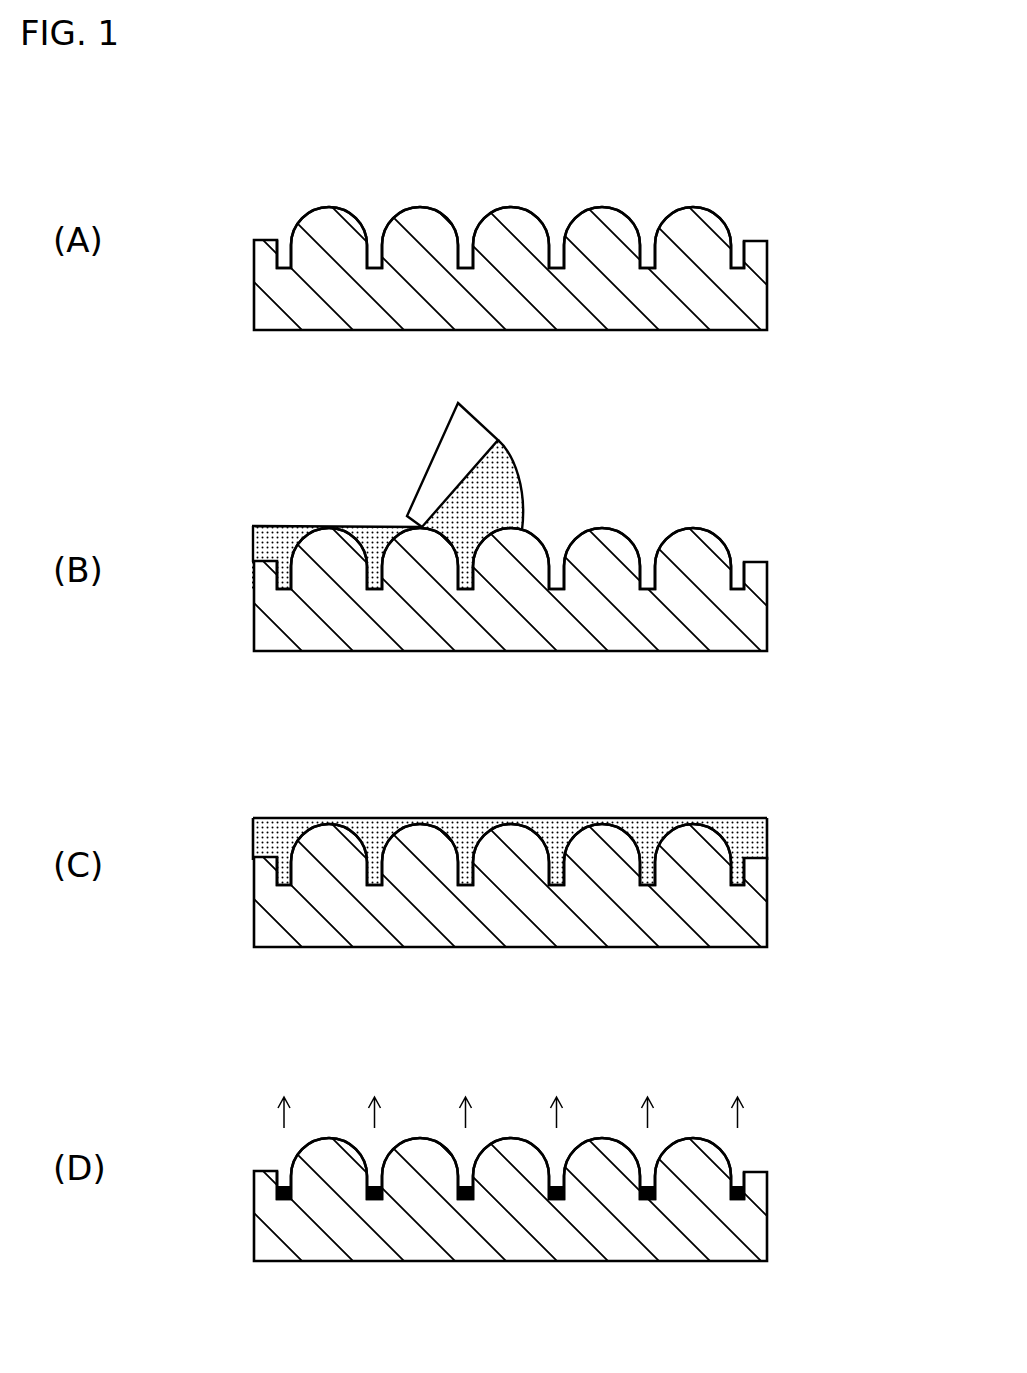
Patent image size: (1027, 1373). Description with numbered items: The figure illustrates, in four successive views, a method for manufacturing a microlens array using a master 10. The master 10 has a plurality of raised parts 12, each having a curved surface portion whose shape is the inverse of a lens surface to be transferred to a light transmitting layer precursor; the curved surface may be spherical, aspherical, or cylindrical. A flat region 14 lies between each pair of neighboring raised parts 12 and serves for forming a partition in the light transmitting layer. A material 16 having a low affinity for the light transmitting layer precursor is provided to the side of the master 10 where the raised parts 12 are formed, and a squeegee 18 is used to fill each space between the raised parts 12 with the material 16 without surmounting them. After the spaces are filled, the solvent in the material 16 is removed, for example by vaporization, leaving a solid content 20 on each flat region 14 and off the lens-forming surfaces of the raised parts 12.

The master 10 is at (768, 290).
The raised part 12 is at (321, 218).
The flat region 14 is at (376, 257).
The material 16 is at (510, 470).
The squeegee 18 is at (472, 418).
The solid content 20 is at (287, 1186).